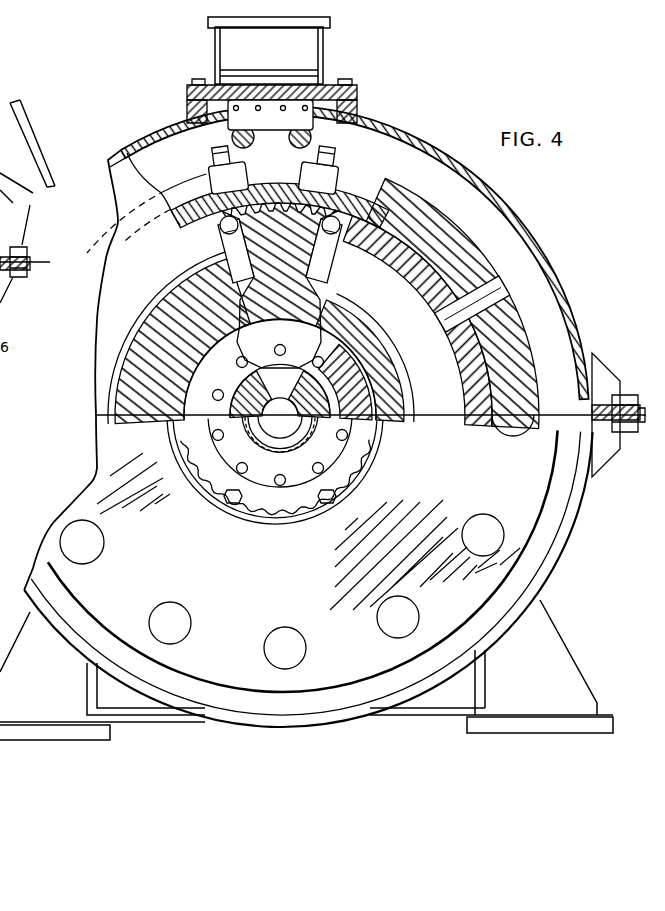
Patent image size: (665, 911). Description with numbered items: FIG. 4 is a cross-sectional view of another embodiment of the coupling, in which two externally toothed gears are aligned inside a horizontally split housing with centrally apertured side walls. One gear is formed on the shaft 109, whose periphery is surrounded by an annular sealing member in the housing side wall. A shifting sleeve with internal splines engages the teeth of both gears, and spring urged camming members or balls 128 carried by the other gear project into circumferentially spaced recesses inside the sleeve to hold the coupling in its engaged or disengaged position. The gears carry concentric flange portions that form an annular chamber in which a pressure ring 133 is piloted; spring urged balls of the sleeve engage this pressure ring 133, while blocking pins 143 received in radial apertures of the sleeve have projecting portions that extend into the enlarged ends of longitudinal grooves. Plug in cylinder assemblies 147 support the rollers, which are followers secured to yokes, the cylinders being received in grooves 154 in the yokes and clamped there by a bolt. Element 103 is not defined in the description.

The housing lower body 103 is at (237, 572).
The shaft 109 is at (157, 327).
The spring urged camming members or balls 128 is at (216, 229).
The pressure ring 133 is at (268, 200).
The blocking pins 143 is at (444, 316).
The plug in cylinder assemblies 147 is at (283, 129).
The grooves 154 is at (234, 174).